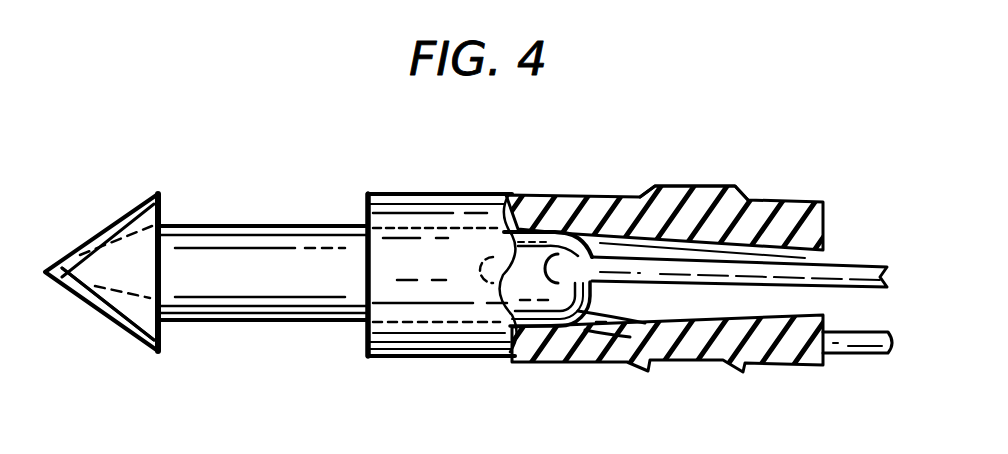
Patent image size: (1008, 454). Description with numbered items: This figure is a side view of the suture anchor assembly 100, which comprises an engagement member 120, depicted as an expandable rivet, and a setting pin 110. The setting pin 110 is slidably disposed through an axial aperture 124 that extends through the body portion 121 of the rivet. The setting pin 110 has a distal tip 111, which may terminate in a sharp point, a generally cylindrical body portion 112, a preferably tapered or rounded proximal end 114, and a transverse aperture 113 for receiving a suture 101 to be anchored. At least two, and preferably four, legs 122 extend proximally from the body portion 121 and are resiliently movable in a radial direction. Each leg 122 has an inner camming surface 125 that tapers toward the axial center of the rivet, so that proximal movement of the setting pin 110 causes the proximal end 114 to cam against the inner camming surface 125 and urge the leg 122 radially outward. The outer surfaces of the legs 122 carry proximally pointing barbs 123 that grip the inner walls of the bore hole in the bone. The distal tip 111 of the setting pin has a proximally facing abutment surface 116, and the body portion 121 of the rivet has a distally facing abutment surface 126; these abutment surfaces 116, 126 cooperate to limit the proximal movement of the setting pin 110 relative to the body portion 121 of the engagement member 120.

The suture anchor assembly 100 is at (474, 158).
The suture 101 is at (837, 265).
The setting pin 110 is at (292, 224).
The distal tip 111 is at (113, 327).
The body portion 112 is at (213, 300).
The transverse aperture 113 is at (528, 289).
The proximal end 114 is at (600, 292).
The abutment surface 116 is at (166, 214).
The engagement member 120 is at (477, 385).
The body portion 121 is at (669, 207).
The legs 122 is at (780, 375).
The barbs 123 is at (746, 196).
The axial aperture 124 is at (358, 346).
The inner camming surface 125 is at (805, 258).
The abutment surface 126 is at (368, 206).